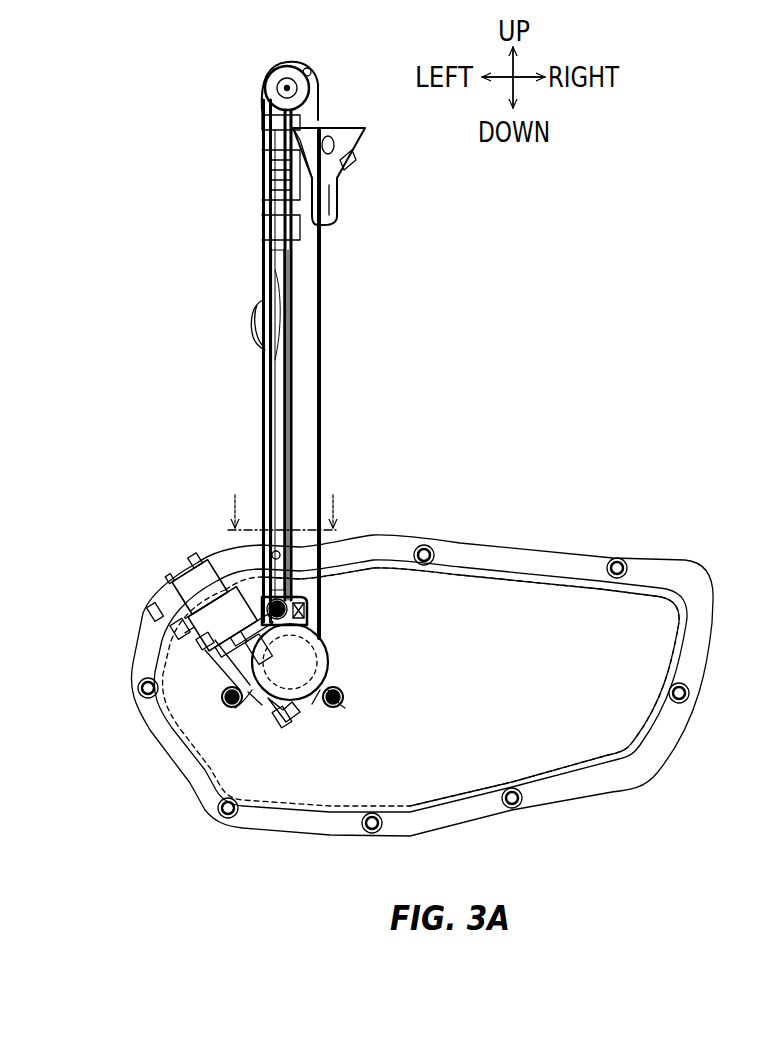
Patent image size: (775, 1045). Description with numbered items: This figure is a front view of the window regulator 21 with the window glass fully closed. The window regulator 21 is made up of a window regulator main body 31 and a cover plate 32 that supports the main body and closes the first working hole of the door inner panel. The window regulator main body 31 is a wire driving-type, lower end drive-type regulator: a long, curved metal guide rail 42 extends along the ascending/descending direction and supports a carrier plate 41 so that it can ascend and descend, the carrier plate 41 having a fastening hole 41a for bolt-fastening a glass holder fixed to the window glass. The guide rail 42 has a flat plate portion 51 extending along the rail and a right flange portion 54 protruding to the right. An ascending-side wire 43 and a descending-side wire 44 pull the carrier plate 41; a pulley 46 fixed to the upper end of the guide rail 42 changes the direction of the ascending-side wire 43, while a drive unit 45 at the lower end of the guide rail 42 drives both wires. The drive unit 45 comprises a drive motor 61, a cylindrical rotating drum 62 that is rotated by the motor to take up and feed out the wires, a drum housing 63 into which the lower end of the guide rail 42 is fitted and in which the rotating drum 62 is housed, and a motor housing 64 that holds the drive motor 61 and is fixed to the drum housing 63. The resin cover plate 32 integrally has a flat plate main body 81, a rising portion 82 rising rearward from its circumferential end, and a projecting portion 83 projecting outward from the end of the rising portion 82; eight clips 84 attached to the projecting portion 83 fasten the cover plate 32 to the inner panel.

The window regulator 21 is at (548, 195).
The window regulator main body 31 is at (386, 300).
The cover plate 32 is at (688, 572).
The carrier plate 41 is at (362, 146).
The fastening hole 41a is at (348, 160).
The guide rail 42 is at (295, 306).
The ascending-side wire 43 is at (262, 404).
The descending-side wire 44 is at (321, 335).
The drive unit 45 is at (332, 653).
The pulley 46 is at (266, 80).
The flat plate portion 51 is at (278, 442).
The right flange portion 54 is at (294, 433).
The drive motor 61 is at (173, 582).
The rotating drum 62 is at (306, 668).
The drum housing 63 is at (302, 619).
The motor housing 64 is at (292, 702).
The plate main body 81 is at (525, 592).
The rising portion 82 is at (475, 562).
The projecting portion 83 is at (577, 549).
The clips 84 is at (425, 545).